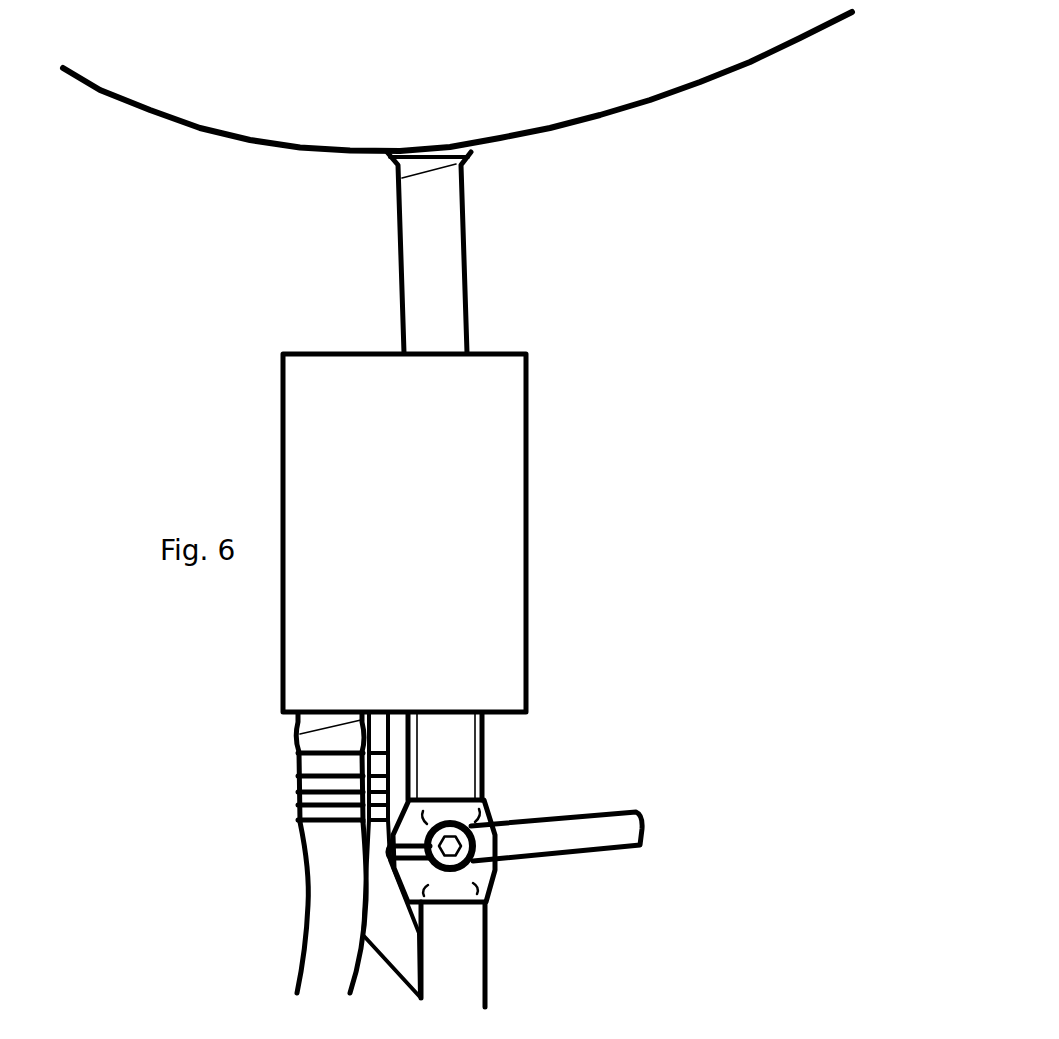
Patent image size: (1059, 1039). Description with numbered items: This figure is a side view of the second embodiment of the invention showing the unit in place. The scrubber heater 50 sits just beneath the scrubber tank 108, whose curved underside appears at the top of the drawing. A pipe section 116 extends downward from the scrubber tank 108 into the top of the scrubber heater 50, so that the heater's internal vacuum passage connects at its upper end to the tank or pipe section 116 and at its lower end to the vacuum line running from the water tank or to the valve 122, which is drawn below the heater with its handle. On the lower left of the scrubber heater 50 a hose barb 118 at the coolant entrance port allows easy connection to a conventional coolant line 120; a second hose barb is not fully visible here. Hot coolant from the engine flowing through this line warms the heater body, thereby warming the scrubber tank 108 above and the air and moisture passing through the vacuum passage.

The scrubber tank 108 is at (411, 98).
The pipe section 116 is at (469, 208).
The scrubber heater 50 is at (527, 390).
The hose barb 118 is at (297, 738).
The coolant line 120 is at (300, 846).
The valve 122 is at (553, 860).